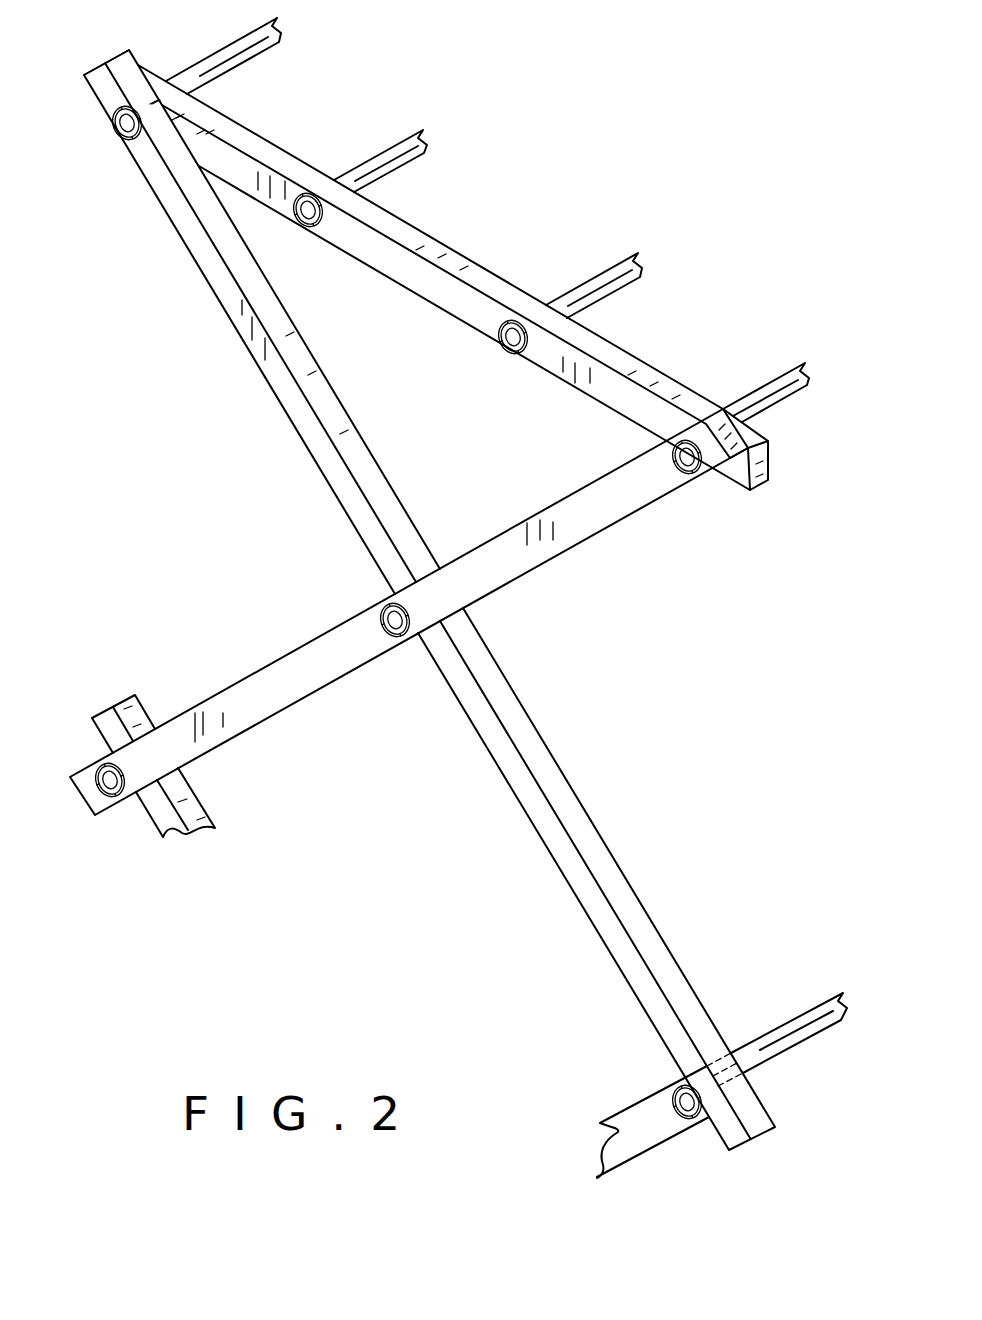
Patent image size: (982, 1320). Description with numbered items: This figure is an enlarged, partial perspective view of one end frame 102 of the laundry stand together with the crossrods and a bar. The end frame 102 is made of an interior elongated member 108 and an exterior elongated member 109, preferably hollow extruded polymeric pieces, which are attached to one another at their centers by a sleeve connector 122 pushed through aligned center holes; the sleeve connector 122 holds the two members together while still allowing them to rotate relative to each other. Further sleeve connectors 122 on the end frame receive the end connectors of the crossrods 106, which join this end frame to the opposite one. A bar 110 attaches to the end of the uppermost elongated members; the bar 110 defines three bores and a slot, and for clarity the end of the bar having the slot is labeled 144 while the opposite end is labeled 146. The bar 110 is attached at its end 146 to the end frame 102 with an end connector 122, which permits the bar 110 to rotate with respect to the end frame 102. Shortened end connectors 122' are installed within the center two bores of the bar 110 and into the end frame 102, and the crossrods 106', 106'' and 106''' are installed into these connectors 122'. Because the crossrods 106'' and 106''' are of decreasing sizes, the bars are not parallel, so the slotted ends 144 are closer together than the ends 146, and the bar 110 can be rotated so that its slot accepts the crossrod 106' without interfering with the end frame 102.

The first end frame 102 is at (224, 411).
The crossrod 106 is at (791, 724).
The crossrod 106' is at (283, 56).
The crossrod 106'' is at (623, 285).
The crossrod 106''' is at (427, 161).
The interior elongated member 108 is at (383, 475).
The exterior elongated member 109 is at (566, 550).
The bar 110 is at (442, 245).
The sleeve connector 122 is at (432, 821).
The shortened end connector 122' is at (285, 243).
The end of the bar having the slot 144 is at (148, 66).
The end of the bar with the bores 146 is at (770, 463).